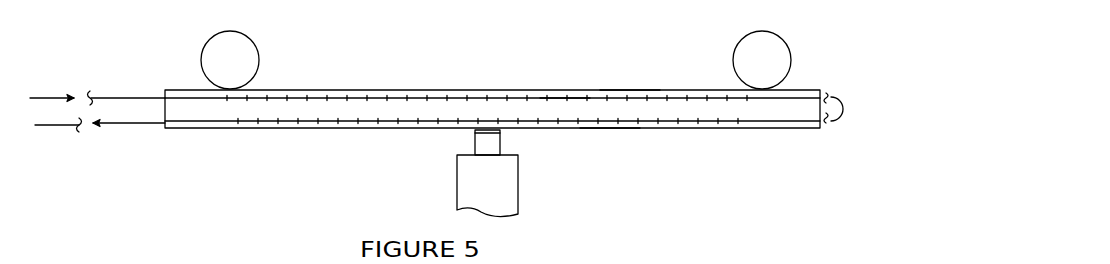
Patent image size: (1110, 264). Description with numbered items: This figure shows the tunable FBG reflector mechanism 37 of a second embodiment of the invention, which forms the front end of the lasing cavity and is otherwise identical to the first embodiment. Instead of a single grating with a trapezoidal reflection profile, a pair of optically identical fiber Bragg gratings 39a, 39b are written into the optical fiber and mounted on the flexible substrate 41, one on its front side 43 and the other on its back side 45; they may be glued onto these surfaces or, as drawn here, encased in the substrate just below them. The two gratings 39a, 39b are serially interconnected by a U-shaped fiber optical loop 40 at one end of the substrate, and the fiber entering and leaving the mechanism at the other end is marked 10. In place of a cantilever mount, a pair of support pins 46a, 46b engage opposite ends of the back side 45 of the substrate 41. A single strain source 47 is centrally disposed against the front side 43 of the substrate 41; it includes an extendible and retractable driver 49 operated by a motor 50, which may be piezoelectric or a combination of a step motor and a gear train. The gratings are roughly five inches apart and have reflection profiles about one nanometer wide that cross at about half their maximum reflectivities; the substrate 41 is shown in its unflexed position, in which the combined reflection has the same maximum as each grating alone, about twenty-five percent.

The web / strip 10 is at (56, 125).
The tunable FBG reflector mechanism 37 is at (327, 43).
The FBG 39a is at (436, 90).
The FBG 39b is at (381, 124).
The U-shaped fiber optical loop 40 is at (843, 108).
The flexible substrate 41 is at (568, 89).
The front side 43 is at (603, 128).
The back side 45 is at (628, 89).
The support pin 46a is at (239, 70).
The support pin 46b is at (771, 70).
The strain source 47 is at (480, 173).
The driver 49 is at (500, 138).
The motor 50 is at (505, 188).